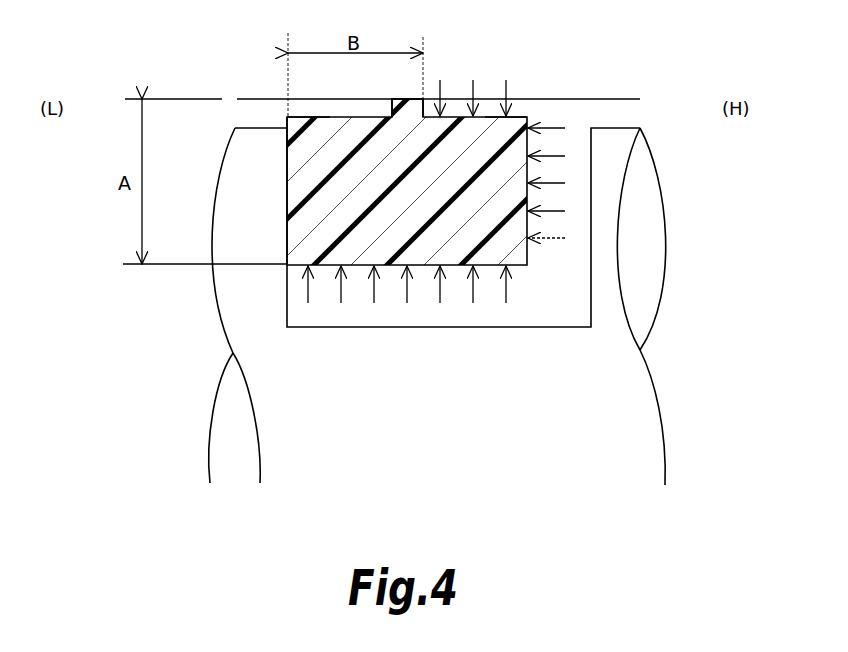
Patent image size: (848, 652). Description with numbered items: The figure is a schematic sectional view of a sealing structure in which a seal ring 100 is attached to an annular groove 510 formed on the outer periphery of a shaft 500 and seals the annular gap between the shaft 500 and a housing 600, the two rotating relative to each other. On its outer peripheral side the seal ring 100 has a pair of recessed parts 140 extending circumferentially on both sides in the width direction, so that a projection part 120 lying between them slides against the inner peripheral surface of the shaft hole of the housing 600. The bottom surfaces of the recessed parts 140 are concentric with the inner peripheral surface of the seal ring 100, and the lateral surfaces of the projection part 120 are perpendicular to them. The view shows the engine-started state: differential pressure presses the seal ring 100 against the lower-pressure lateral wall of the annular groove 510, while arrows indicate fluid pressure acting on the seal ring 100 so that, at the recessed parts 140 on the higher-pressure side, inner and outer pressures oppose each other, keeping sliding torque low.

The seal ring 100 is at (534, 120).
The projection part 120 is at (407, 100).
The recessed parts 140 is at (307, 116).
The annular groove 510 is at (592, 279).
The shaft 500 is at (424, 300).
The housing 600 is at (382, 75).